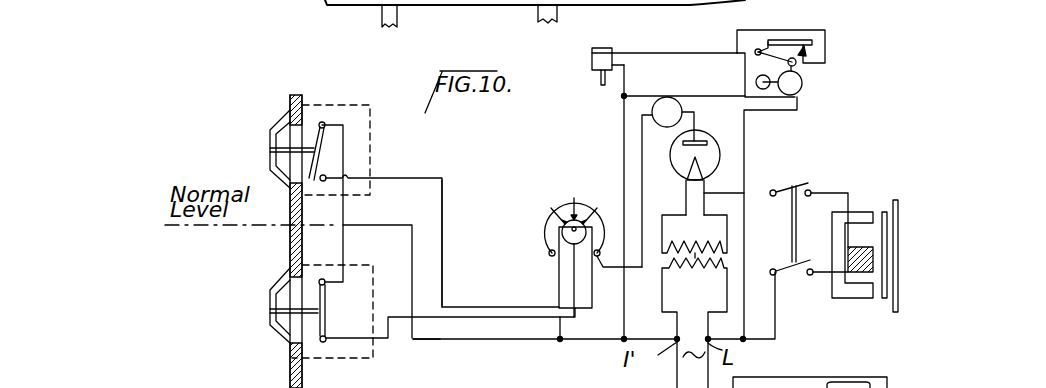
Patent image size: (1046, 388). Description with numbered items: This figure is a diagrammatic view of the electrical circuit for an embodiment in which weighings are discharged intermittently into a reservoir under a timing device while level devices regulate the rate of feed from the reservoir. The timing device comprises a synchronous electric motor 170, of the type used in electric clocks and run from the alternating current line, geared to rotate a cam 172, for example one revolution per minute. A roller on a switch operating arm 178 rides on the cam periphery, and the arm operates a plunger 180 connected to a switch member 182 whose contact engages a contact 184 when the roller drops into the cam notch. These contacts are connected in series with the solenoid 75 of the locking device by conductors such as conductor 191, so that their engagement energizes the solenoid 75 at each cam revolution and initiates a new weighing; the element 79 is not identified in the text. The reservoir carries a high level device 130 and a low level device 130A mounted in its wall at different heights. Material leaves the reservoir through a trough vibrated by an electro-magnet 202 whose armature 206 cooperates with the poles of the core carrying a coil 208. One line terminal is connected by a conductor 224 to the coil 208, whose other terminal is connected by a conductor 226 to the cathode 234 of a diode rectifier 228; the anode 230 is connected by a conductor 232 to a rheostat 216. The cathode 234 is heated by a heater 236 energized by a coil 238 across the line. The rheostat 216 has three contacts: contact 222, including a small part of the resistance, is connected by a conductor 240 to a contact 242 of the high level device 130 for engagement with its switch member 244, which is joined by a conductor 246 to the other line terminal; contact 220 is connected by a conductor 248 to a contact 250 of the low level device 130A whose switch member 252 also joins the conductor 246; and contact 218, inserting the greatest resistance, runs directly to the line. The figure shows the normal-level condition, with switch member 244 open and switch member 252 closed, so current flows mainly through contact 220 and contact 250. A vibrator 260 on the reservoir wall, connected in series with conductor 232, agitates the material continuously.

The solenoid 75 is at (592, 57).
The plug pin 79 is at (598, 78).
The high level device 130 is at (272, 155).
The low level device 130A is at (277, 327).
The synchronous electric motor 170 is at (802, 83).
The cam 172 is at (753, 82).
The switch operating arm 178 is at (776, 63).
The plunger 180 is at (750, 57).
The switch member 182 is at (783, 40).
The contact 184 is at (807, 50).
The conductor 191 is at (827, 30).
The electro-magnet 202 is at (858, 300).
The armature 206 is at (887, 238).
The coil 208 is at (863, 243).
The rheostat 216 is at (542, 233).
The contact 218 is at (553, 211).
The contact 220 is at (567, 197).
The contact 222 is at (607, 197).
The conductor 224 is at (775, 293).
The conductor 226 is at (760, 190).
The diode rectifier 228 is at (718, 155).
The anode 230 is at (698, 130).
The conductor 232 is at (642, 140).
The cathode 234 is at (710, 162).
The heater 236 is at (694, 234).
The coil 238 is at (694, 320).
The conductor 240 is at (457, 307).
The contact 242 is at (327, 178).
The switch member 244 is at (324, 124).
The conductor 246 is at (347, 210).
The conductor 248 is at (443, 320).
The contact 250 is at (328, 342).
The switch member 252 is at (324, 284).
The vibrator 260 is at (657, 110).